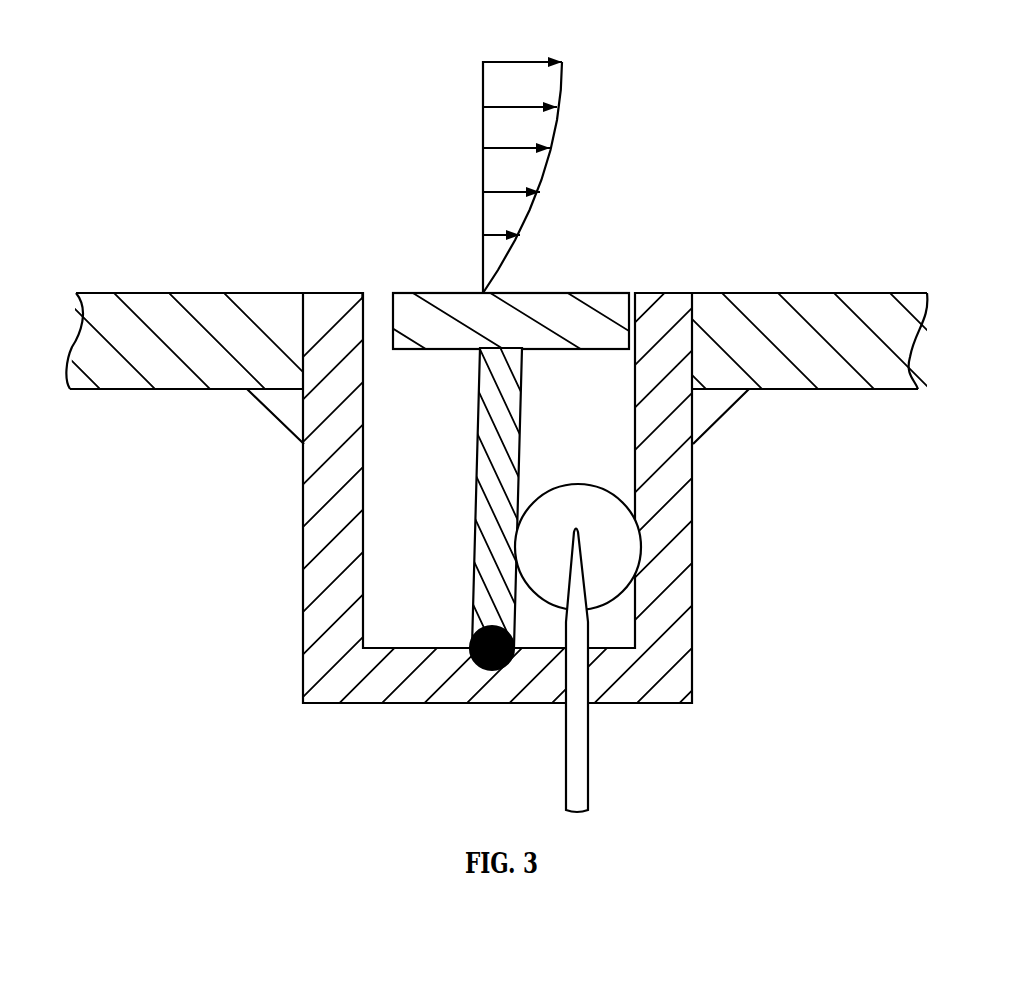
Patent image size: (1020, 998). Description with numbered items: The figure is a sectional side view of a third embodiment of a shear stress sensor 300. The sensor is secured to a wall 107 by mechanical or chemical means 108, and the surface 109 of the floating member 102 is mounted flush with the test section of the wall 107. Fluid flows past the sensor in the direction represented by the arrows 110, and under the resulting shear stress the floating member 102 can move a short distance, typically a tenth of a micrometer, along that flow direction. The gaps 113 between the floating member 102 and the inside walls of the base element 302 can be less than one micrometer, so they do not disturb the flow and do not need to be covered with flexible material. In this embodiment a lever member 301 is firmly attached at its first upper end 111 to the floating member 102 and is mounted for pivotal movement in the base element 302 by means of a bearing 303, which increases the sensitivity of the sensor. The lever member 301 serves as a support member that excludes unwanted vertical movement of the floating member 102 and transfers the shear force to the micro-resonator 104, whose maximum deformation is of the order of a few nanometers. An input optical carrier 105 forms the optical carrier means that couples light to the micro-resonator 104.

The shear stress sensor 300 is at (510, 530).
The base element 302 is at (325, 697).
The wall 107 is at (186, 293).
The mechanical or chemical means 108 is at (270, 417).
The gaps 113 is at (380, 292).
The floating member 102 is at (450, 300).
The surface 109 is at (540, 292).
The arrows 110 is at (522, 154).
The first upper end 111 is at (467, 435).
The lever member 301 is at (480, 548).
The micro-resonator 104 is at (555, 493).
The input optical carrier 105 is at (588, 780).
The bearing 303 is at (490, 672).